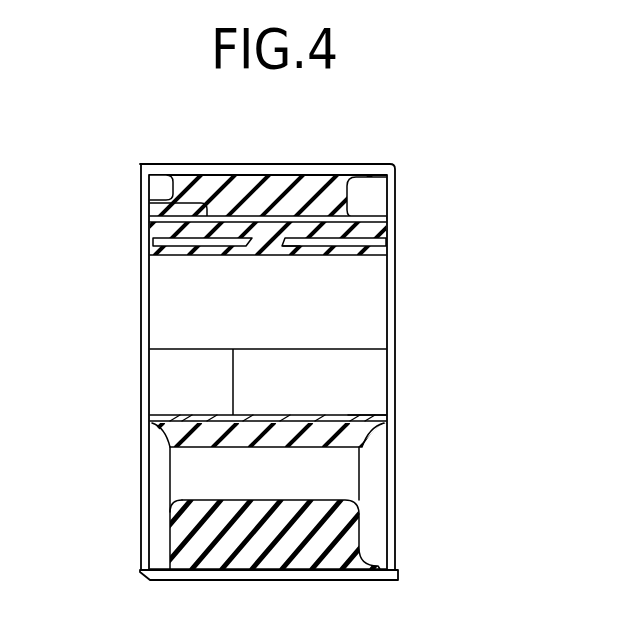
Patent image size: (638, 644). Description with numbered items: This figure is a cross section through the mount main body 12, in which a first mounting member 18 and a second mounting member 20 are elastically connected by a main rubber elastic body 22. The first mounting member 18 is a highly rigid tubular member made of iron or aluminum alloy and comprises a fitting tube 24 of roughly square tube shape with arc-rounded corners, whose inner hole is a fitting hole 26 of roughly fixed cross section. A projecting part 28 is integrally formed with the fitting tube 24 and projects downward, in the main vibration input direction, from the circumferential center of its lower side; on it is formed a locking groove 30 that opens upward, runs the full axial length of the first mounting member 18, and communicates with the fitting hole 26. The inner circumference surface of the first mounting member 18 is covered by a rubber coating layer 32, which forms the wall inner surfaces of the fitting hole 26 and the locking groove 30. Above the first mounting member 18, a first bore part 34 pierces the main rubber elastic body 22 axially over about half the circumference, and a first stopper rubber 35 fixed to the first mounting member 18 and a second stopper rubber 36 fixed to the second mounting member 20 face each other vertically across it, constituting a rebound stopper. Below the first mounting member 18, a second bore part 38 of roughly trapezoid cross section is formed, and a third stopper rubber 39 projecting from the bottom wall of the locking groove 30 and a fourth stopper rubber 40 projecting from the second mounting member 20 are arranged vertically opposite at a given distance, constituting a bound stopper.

The mount main body 12 is at (428, 140).
The first mounting member 18 is at (89, 293).
The second mounting member 20 is at (183, 576).
The main rubber elastic body 22 is at (160, 527).
The fitting tube 24 is at (190, 247).
The fitting hole 26 is at (352, 252).
The projecting part 28 is at (222, 418).
The locking groove 30 is at (340, 407).
The rubber coating layer 32 is at (312, 252).
The first bore part 34 is at (205, 212).
The first stopper rubber 35 is at (297, 222).
The second stopper rubber 36 is at (233, 197).
The second bore part 38 is at (322, 494).
The third stopper rubber 39 is at (202, 436).
The fourth stopper rubber 40 is at (348, 536).